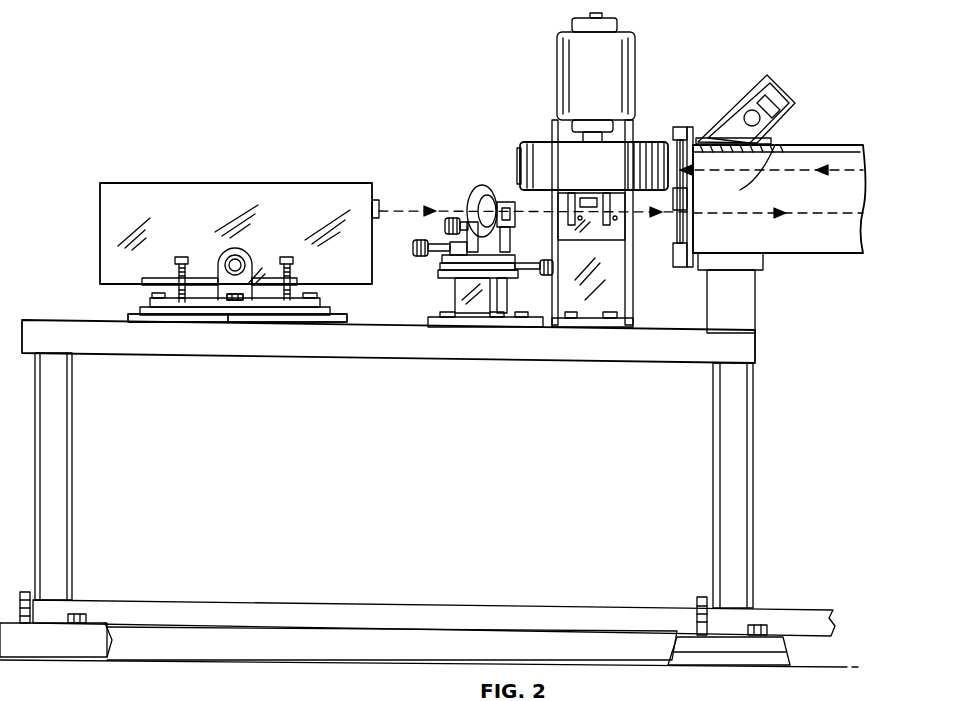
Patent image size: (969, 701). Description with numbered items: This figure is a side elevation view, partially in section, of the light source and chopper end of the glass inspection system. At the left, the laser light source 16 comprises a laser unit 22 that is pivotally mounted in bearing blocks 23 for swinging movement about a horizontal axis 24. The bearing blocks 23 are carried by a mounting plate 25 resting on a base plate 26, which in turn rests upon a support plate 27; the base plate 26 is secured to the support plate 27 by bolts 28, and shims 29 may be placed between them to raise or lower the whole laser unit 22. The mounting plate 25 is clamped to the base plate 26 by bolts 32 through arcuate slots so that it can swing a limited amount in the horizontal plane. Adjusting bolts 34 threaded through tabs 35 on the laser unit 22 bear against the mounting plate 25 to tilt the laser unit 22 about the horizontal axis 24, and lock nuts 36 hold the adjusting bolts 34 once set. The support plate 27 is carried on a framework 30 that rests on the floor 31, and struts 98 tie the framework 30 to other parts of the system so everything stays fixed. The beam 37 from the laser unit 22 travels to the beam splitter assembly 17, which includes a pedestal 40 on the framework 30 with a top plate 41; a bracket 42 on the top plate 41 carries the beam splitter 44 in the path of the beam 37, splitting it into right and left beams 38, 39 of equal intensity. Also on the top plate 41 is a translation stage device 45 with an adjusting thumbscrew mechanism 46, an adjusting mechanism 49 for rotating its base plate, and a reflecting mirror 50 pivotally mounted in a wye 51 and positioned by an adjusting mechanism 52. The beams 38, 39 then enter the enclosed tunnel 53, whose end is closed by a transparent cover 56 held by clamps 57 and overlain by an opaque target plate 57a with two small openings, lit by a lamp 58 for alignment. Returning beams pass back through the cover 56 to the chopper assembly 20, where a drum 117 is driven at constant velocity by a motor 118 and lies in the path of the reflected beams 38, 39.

The laser light source 16 is at (239, 200).
The laser unit 22 is at (190, 185).
The beam 37 is at (396, 205).
The adjusting bolts 34 is at (182, 258).
The horizontal axis 24 is at (243, 258).
The bearing blocks 23 is at (261, 253).
The lock nuts 36 is at (176, 262).
The tabs 35 is at (176, 285).
The bolts 28 is at (320, 302).
The base plate 26 is at (330, 311).
The support plate 27 is at (190, 320).
The mounting plate 25 is at (277, 316).
The shims 29 is at (320, 322).
The bolts 32 is at (247, 300).
The framework 30 is at (85, 452).
The struts 98 is at (285, 605).
The floor 31 is at (518, 661).
The beam splitter assembly 17 is at (478, 219).
The reflecting mirror 50 is at (472, 188).
The wye 51 is at (458, 210).
The beam splitter 44 is at (500, 200).
The bracket 42 is at (510, 228).
The adjusting mechanism 52 is at (444, 226).
The adjusting mechanism 49 is at (432, 266).
The translation stage device 45 is at (441, 270).
The adjusting thumbscrew mechanism 46 is at (553, 266).
The top plate 41 is at (443, 281).
The pedestal 40 is at (503, 291).
The chopper assembly 20 is at (691, 170).
The transparent covers 56 is at (680, 226).
The motor 118 is at (567, 47).
The drum 117 is at (543, 150).
The clamps 57 is at (678, 125).
The target plate 57a is at (688, 253).
The tunnel 53 is at (800, 150).
The lamp 58 is at (788, 95).
The right beam 38 is at (822, 168).
The left beam 39 is at (808, 232).